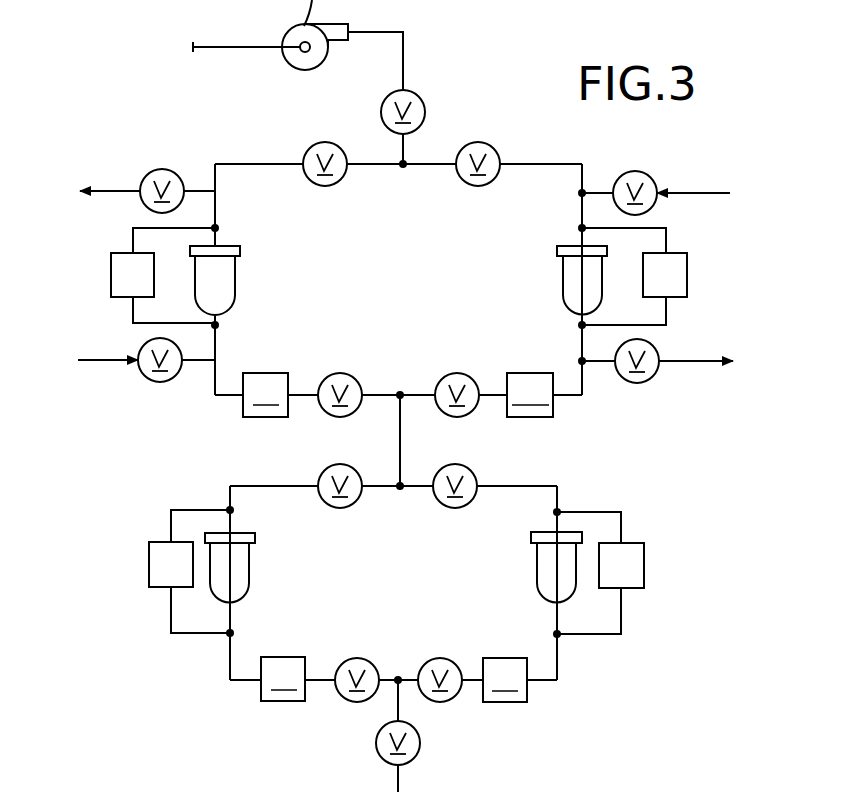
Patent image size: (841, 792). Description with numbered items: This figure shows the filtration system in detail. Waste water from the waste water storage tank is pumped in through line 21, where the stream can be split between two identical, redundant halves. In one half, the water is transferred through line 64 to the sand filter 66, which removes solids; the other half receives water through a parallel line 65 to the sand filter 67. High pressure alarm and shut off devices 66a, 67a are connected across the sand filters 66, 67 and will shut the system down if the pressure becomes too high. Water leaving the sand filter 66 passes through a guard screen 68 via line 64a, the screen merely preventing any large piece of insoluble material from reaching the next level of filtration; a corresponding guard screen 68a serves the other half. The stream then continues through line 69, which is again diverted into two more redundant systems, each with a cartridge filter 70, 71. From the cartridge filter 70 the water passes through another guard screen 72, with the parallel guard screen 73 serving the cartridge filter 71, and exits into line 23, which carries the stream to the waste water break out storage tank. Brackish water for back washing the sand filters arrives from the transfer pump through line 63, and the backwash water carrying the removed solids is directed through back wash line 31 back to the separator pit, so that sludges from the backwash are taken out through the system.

The line 21 is at (405, 153).
The line 23 is at (398, 785).
The back wash line 31 is at (193, 190).
The line 63 is at (108, 358).
The line 64 is at (363, 167).
The line 64a is at (216, 345).
The header conduit 65 is at (435, 167).
The sand filter 66 is at (222, 283).
The high pressure alarm and shut off device 66a is at (122, 267).
The sand filter 67 is at (578, 284).
The high pressure alarm and shut off device 67a is at (678, 275).
The guard screen 68 is at (266, 395).
The flow meter 68a is at (530, 395).
The line 69 is at (400, 438).
The cartridge filter 70 is at (233, 573).
The filter vessel 71 is at (547, 571).
The guard screen 72 is at (282, 679).
The flow meter 73 is at (509, 680).